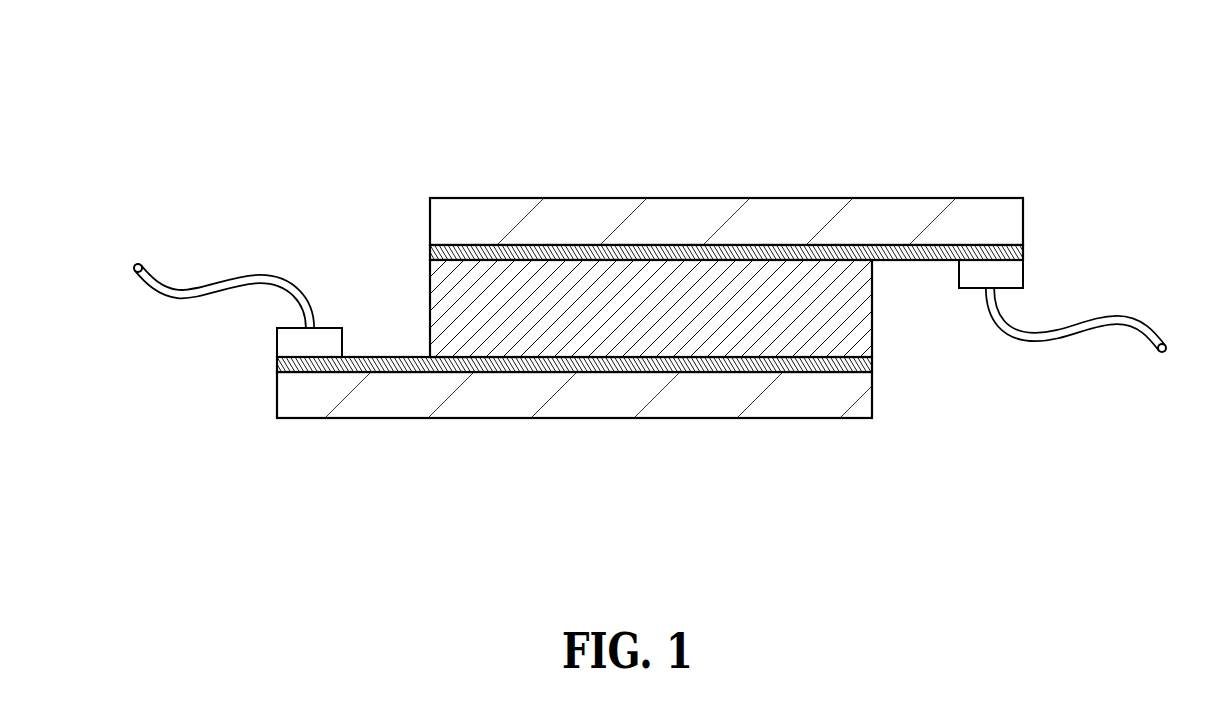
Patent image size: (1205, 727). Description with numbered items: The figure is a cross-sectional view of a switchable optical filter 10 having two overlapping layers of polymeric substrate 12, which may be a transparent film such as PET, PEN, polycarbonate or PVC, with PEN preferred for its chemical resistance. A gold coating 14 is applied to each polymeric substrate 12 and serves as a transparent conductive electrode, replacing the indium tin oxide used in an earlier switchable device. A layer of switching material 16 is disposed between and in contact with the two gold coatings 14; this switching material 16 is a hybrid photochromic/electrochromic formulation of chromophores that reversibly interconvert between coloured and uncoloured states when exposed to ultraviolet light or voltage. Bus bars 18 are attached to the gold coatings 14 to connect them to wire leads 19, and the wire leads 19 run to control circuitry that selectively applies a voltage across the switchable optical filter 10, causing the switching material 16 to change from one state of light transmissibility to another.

The switchable optical filter 10 is at (961, 95).
The polymeric substrate 12 is at (690, 198).
The gold coating 14 is at (277, 363).
The switching material 16 is at (430, 312).
The bus bar 18 is at (276, 342).
The wire lead 19 is at (160, 286).